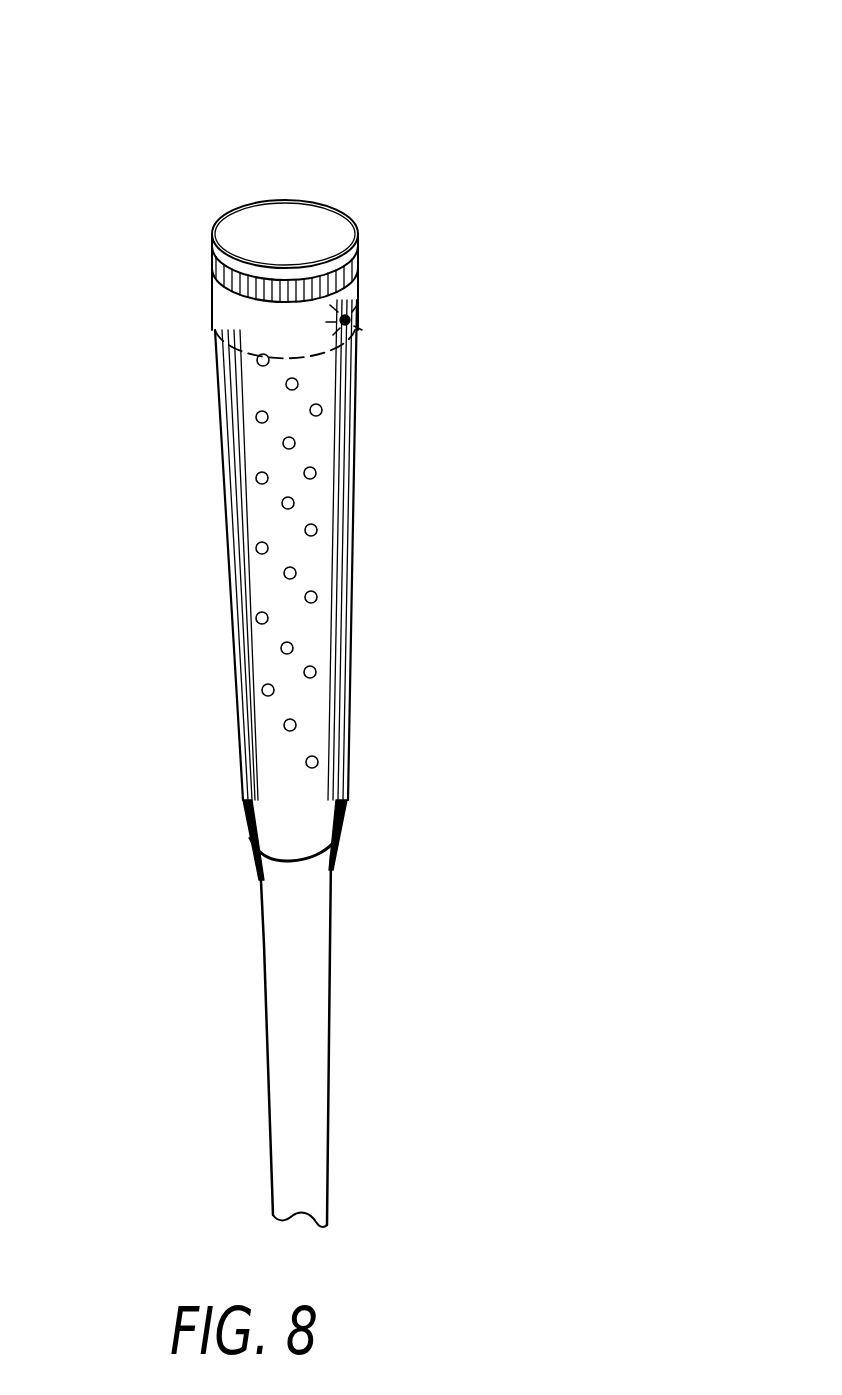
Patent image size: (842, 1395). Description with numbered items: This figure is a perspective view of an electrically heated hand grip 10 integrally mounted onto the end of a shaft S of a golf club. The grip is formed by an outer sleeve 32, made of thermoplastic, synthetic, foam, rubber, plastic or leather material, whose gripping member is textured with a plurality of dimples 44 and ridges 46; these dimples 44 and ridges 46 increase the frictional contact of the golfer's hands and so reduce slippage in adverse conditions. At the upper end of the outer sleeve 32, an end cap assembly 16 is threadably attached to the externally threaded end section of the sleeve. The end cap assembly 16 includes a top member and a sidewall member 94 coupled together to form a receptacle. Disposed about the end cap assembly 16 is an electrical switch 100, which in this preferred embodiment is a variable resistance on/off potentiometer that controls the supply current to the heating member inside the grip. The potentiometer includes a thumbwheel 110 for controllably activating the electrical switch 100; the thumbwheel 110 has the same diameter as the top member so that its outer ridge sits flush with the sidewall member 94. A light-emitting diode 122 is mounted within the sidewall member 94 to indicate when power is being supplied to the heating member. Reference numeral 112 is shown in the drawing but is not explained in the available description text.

The electrically heated hand grip 10 is at (176, 158).
The cap top surface 112 is at (330, 230).
The electrical switch 100 is at (357, 230).
The thumbwheel 110 is at (360, 263).
The light-emitting diode 122 is at (353, 323).
The end cap assembly 16 is at (212, 288).
The sidewall member 94 is at (240, 320).
The outer sleeve 32 is at (228, 440).
The ridges 46 is at (340, 545).
The dimples 44 is at (318, 672).
The shaft S is at (330, 1008).